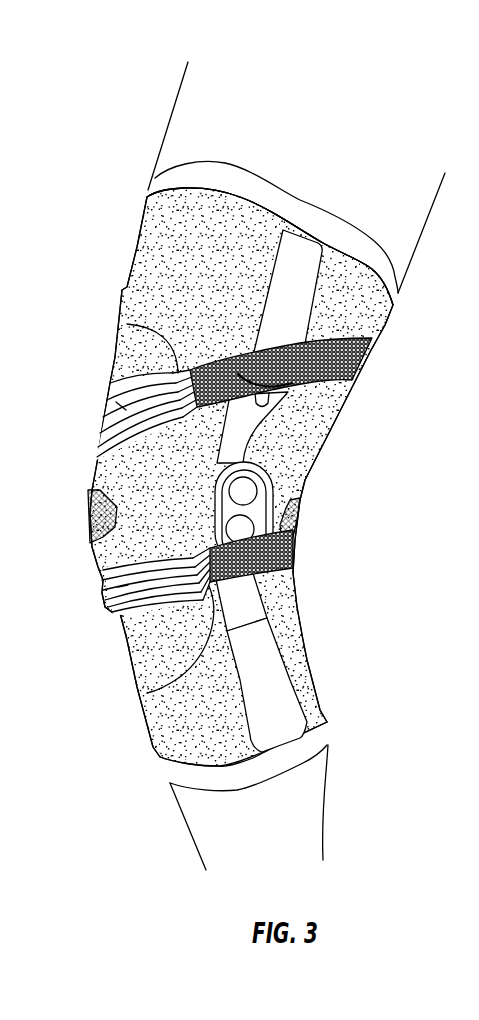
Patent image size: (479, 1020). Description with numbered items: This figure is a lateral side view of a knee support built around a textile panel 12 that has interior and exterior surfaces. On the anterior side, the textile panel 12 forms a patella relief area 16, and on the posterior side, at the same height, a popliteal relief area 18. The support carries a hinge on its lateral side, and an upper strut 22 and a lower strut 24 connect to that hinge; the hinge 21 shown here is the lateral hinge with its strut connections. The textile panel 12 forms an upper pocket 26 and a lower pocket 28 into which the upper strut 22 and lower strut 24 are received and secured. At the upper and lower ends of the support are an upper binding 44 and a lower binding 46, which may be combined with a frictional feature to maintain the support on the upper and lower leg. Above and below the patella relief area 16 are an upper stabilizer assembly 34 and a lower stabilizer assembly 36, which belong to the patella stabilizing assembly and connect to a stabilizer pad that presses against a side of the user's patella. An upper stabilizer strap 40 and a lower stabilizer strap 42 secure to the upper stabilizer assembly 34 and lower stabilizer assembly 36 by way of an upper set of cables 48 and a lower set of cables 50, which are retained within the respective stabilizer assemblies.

The textile panel 12 is at (150, 262).
The patella relief area 16 is at (90, 510).
The popliteal relief area 18 is at (300, 513).
The hinge 21 is at (258, 513).
The upper strut 22 is at (258, 428).
The lower strut 24 is at (250, 603).
The upper pocket 26 is at (305, 283).
The lower pocket 28 is at (265, 675).
The upper stabilizer assembly 34 is at (127, 412).
The lower stabilizer assembly 36 is at (120, 588).
The upper stabilizer strap 40 is at (360, 357).
The lower stabilizer strap 42 is at (283, 560).
The upper binding 44 is at (283, 207).
The lower binding 46 is at (300, 766).
The upper set of cables 48 is at (127, 324).
The lower set of cables 50 is at (147, 693).